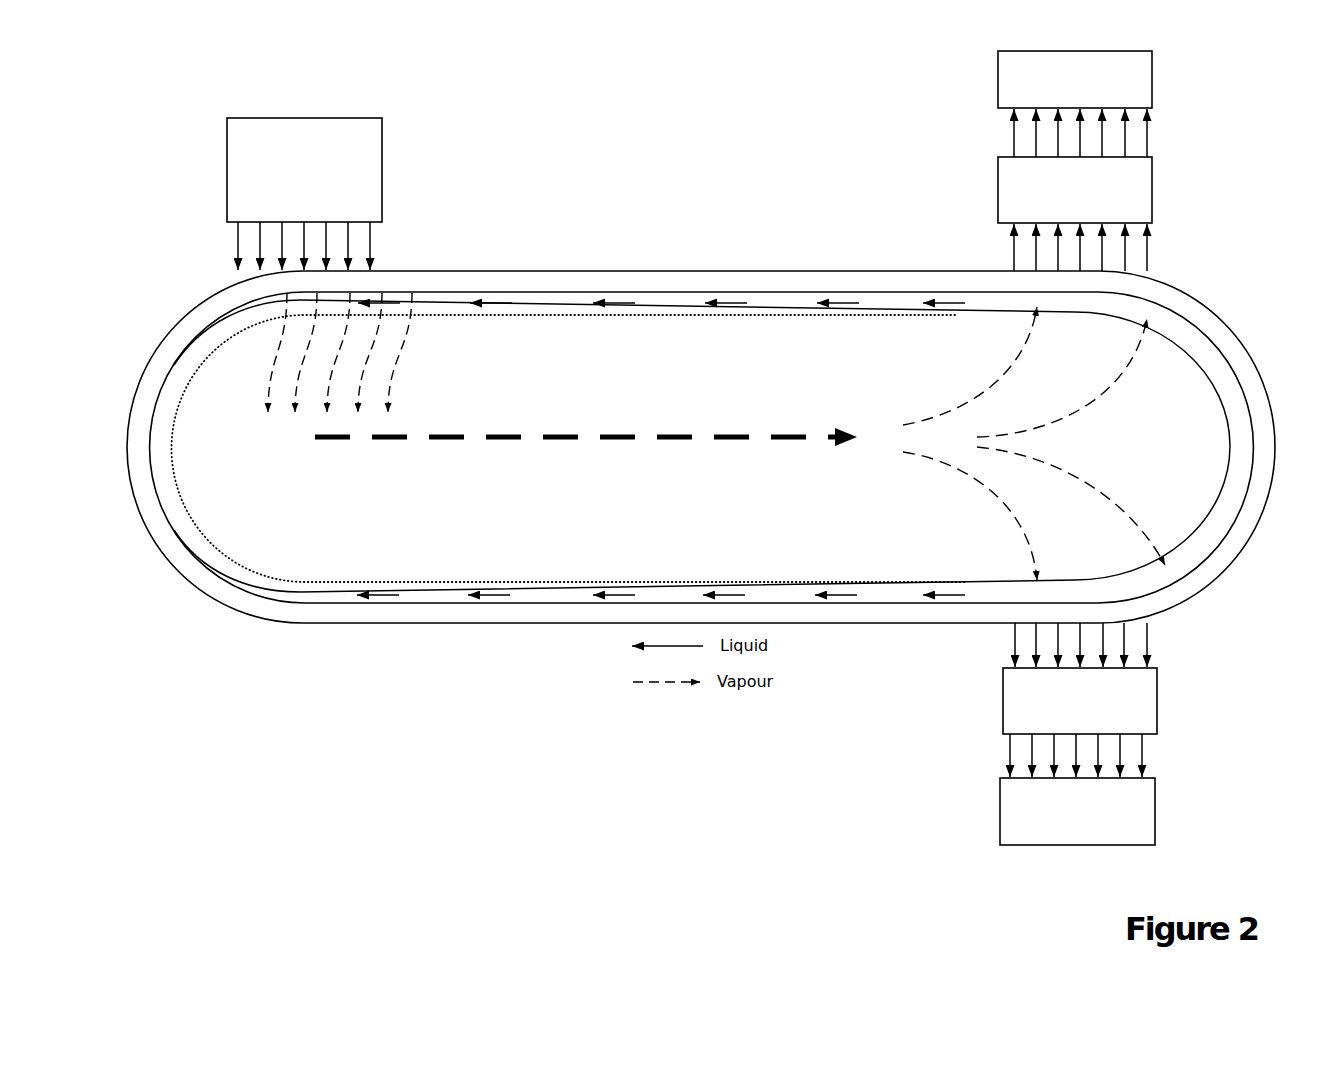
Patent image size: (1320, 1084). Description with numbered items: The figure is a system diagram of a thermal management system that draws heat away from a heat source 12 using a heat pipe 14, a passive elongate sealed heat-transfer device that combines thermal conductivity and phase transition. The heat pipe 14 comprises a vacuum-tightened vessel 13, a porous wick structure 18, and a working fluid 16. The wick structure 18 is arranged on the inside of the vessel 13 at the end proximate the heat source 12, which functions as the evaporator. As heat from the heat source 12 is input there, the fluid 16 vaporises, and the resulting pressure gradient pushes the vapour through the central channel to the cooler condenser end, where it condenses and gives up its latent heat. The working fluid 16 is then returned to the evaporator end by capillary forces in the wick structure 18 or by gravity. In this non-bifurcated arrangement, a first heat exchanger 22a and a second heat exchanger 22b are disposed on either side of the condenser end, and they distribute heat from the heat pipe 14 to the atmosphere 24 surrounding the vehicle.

The heat source 12 is at (326, 118).
The vacuum-tightened vessel 13 is at (655, 270).
The heat pipe 14 is at (507, 220).
The working fluid 16 is at (988, 305).
The porous wick structure 18 is at (183, 378).
The first heat exchanger 22a is at (1152, 185).
The second heat exchanger 22b is at (1157, 698).
The atmosphere 24 is at (998, 76).